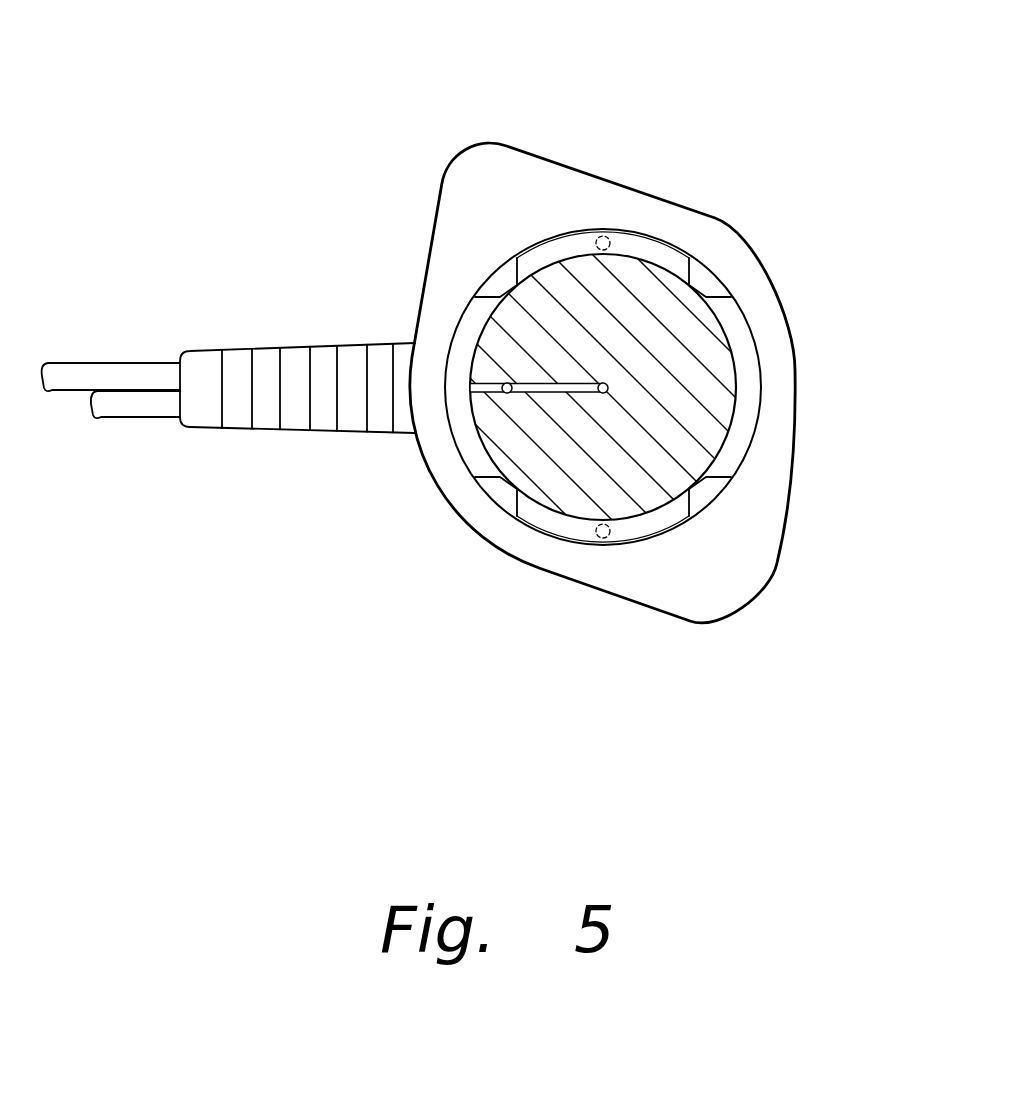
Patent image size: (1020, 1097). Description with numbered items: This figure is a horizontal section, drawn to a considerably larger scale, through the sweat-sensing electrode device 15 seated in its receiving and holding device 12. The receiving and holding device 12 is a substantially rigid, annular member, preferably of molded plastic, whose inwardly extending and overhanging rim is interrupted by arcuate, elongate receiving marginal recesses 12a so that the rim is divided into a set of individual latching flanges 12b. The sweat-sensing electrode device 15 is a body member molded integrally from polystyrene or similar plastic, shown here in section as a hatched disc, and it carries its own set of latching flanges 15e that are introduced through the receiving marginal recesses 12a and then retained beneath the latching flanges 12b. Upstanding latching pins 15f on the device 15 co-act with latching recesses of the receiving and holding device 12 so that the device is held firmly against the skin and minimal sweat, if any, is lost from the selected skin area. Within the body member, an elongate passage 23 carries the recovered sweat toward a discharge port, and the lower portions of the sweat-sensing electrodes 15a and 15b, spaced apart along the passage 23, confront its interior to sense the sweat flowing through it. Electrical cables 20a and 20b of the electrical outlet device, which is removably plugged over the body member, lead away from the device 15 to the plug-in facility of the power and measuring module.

The receiving and holding device 12 is at (663, 578).
The receiving marginal recess 12a is at (743, 423).
The latching flange 12b is at (491, 296).
The sweat-sensing electrode device 15 is at (672, 360).
The sweat-sensing electrode 15a is at (604, 384).
The sweat-sensing electrode 15b is at (503, 385).
The latching flange 15e is at (562, 248).
The latching pin 15f is at (602, 237).
The electrical cable 20a is at (130, 412).
The electrical cable 20b is at (147, 369).
The passage 23 is at (532, 384).